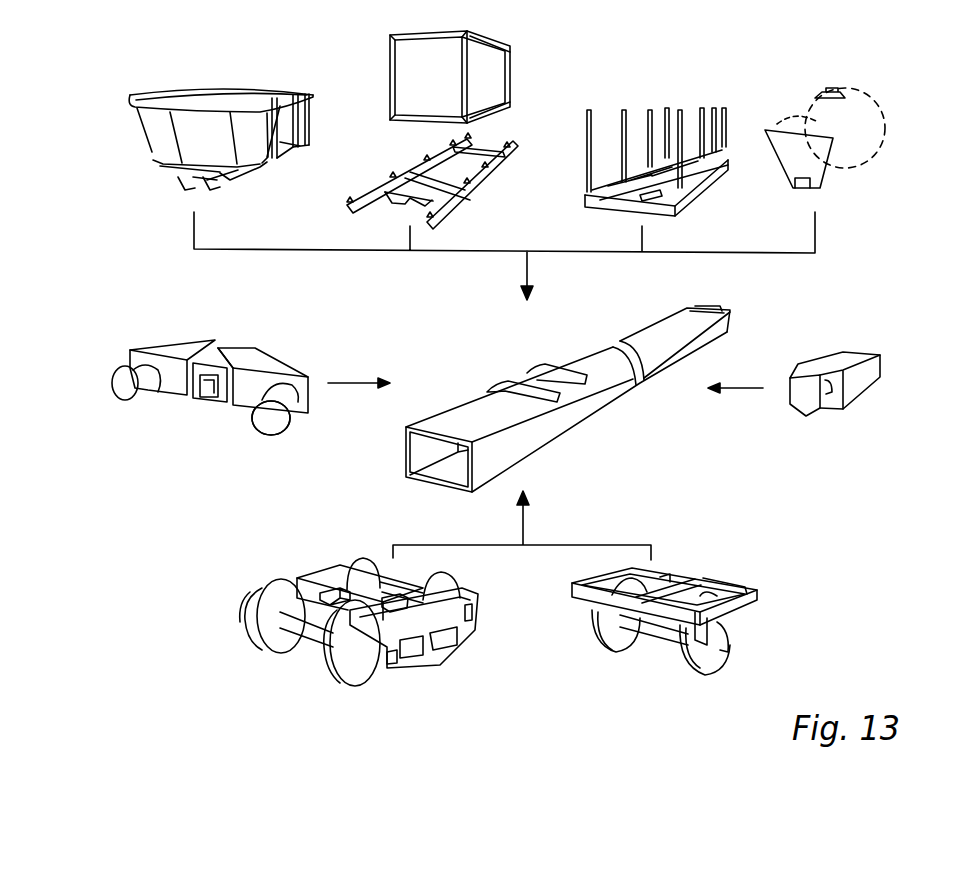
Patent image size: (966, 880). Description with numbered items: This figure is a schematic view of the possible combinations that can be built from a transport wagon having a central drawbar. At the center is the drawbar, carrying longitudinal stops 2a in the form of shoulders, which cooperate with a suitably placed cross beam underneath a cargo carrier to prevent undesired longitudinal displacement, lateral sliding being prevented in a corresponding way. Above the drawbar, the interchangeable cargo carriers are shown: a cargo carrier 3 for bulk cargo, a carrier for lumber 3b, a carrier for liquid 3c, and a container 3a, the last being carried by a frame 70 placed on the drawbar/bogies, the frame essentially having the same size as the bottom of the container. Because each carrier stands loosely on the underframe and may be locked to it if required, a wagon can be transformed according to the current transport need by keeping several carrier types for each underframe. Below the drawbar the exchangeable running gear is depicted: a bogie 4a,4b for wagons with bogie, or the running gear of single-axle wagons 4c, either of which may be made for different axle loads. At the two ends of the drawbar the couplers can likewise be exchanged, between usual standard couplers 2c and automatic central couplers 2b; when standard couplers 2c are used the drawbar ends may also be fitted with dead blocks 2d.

The cargo carrier 3 is at (150, 123).
The container 3a is at (490, 73).
The frame 70 is at (457, 200).
The lumber cargo carrier 3b is at (684, 112).
The liquid cargo carrier 3c is at (853, 120).
The standard coupler 2c is at (233, 354).
The dead block 2d is at (267, 420).
The longitudinal stop 2a is at (567, 383).
The central coupler 2b is at (852, 392).
The bogie 4a,4b is at (427, 627).
The single-axle wagon running gear 4c is at (733, 608).